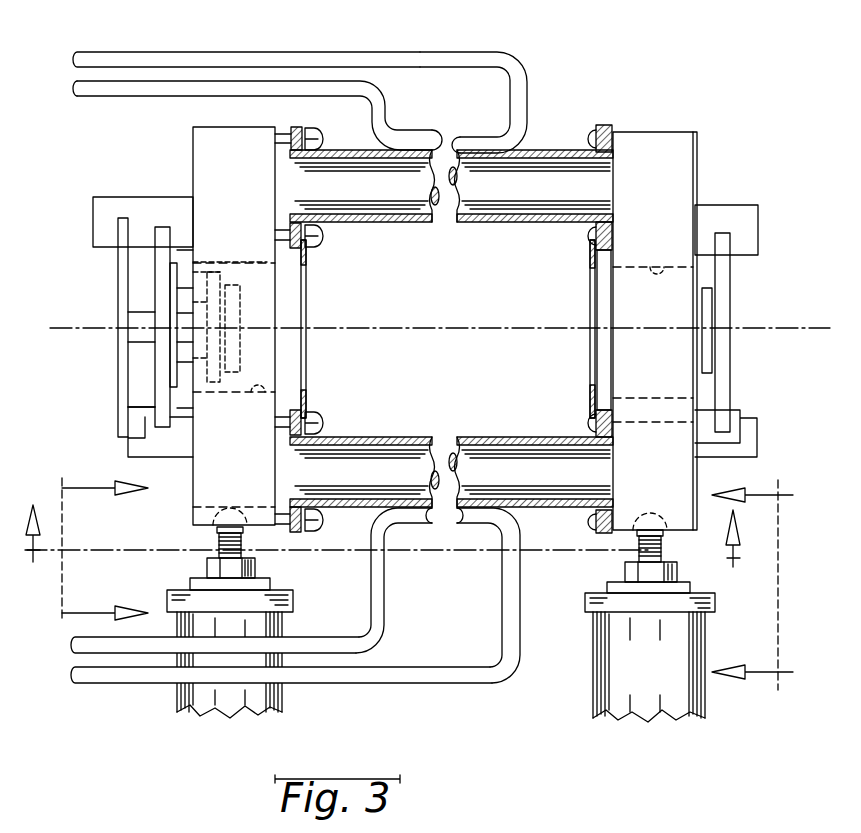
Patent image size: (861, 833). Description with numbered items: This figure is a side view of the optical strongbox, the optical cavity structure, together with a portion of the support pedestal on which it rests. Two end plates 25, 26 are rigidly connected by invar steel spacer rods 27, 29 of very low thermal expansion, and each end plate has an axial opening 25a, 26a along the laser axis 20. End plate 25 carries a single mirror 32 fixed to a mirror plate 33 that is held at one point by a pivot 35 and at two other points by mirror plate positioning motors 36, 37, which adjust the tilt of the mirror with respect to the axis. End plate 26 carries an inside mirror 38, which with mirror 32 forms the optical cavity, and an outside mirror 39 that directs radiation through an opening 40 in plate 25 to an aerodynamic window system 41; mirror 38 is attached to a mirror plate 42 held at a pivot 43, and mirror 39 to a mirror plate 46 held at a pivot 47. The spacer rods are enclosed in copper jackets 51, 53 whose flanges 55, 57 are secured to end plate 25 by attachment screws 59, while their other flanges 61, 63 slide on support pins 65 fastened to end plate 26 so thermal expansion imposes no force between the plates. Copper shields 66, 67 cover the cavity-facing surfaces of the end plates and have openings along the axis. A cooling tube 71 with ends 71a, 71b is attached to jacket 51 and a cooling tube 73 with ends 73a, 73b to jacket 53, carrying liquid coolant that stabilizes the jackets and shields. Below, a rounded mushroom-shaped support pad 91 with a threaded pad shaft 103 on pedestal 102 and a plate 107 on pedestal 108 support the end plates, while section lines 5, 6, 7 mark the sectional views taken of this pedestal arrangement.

The laser axis 20 is at (462, 328).
The end plate 25 is at (631, 132).
The axial opening 25a is at (657, 260).
The end plate 26 is at (193, 132).
The axial opening 26a is at (258, 399).
The top spacer rod 27 is at (490, 207).
The bottom spacer rod 29 is at (480, 455).
The mirror 32 is at (702, 300).
The mirror plate 33 is at (730, 268).
The pivot 35 is at (757, 415).
The mirror plate positioning motor 36 is at (758, 222).
The mirror plate positioning motor 37 is at (758, 442).
The inside mirror 38 is at (246, 302).
The outside mirror 39 is at (240, 262).
The opening 40 is at (645, 512).
The aerodynamic window system 41 is at (130, 318).
The mirror plate 42 is at (117, 226).
The pivot 43 is at (128, 455).
The mirror plate 46 is at (155, 400).
The pivot 47 is at (211, 272).
The copper jacket 51 is at (412, 150).
The copper jacket 53 is at (355, 437).
The flange 55 is at (605, 125).
The flange 57 is at (596, 535).
The attachment screws 59 is at (591, 133).
The flange 61 is at (300, 127).
The flange 63 is at (302, 532).
The support pins 65 is at (323, 237).
The copper shield 66 is at (590, 262).
The copper shield 67 is at (306, 265).
The cooling tube 71 is at (468, 137).
The tube end 71a is at (116, 97).
The tube end 71b is at (298, 52).
The cooling tube 73 is at (425, 524).
The tube end 73a is at (384, 600).
The tube end 73b is at (316, 683).
The support pad 91 is at (633, 538).
The pedestal 102 is at (705, 700).
The pad shaft 103 is at (677, 566).
The plate 107 is at (285, 588).
The pedestal 108 is at (177, 700).
The section line 5- 5 is at (385, 548).
The section line 6- 6 is at (90, 550).
The section line 7- 7 is at (762, 585).